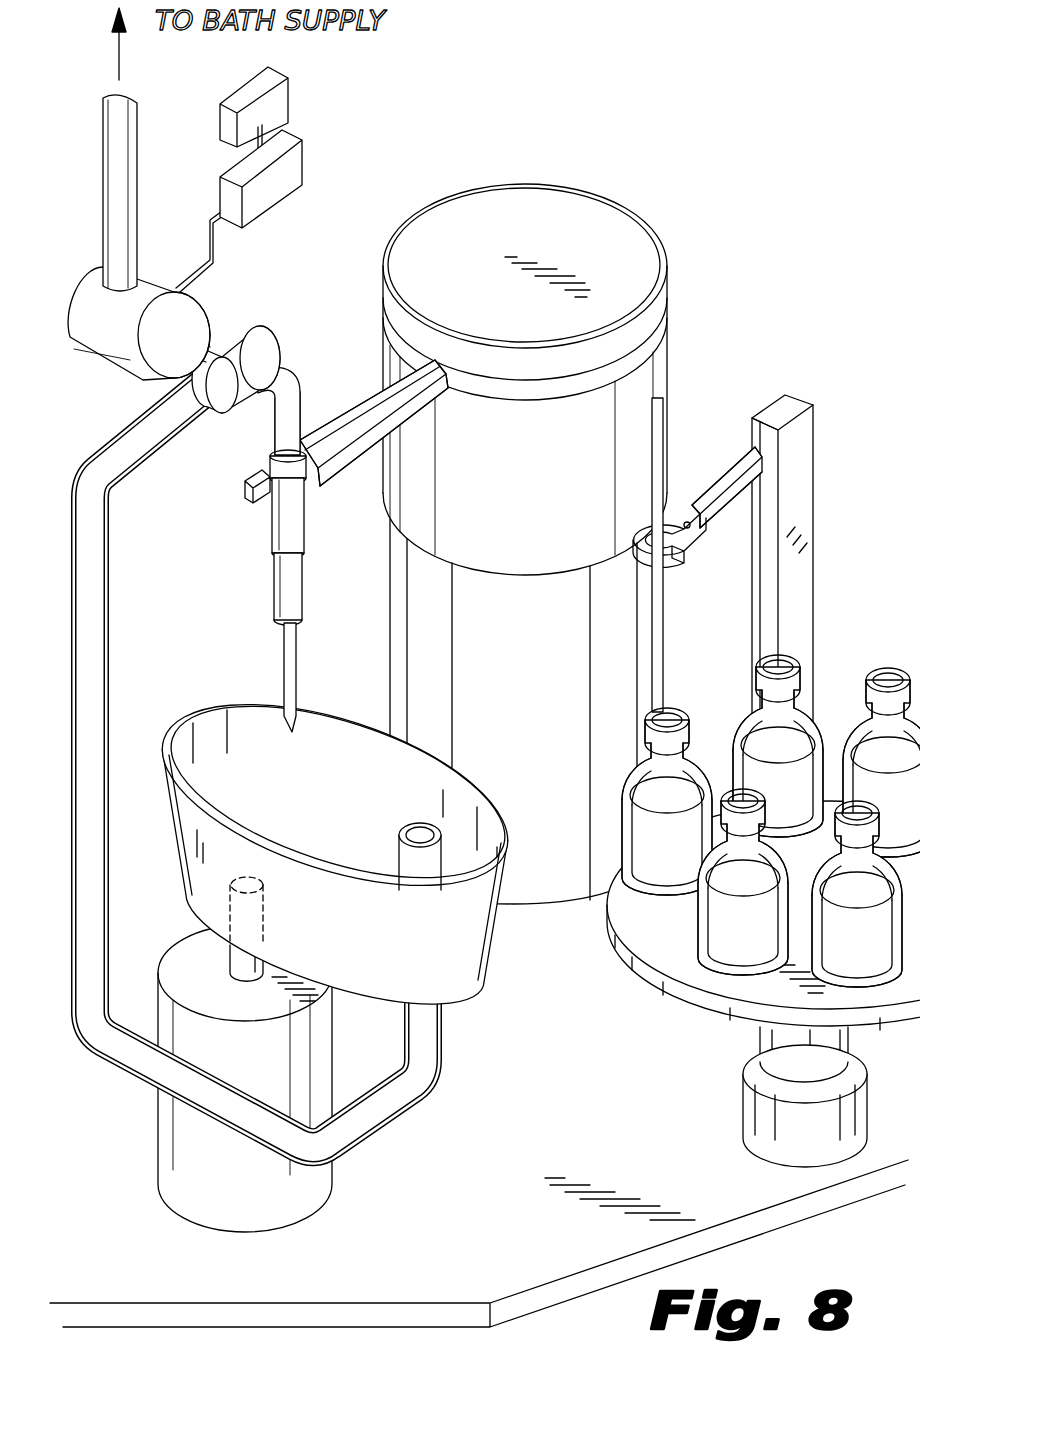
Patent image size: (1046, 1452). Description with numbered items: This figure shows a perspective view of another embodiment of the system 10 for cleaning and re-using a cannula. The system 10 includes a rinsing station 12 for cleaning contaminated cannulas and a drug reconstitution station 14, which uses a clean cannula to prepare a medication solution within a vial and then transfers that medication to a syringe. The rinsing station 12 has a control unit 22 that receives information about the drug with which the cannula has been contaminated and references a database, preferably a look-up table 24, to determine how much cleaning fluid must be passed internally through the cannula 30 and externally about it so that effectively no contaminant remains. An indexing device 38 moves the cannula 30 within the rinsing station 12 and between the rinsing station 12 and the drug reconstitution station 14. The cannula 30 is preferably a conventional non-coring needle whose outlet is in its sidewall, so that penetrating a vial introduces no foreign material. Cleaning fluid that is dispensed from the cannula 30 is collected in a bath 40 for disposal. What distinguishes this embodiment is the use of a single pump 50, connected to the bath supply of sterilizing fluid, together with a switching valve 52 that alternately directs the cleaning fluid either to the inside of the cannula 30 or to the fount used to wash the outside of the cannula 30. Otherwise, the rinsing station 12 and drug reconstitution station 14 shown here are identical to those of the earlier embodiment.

The system for cleaning and re-using a cannula 10 is at (713, 198).
The rinsing station 12 is at (181, 692).
The drug reconstitution station 14 is at (666, 1025).
The control unit 22 is at (300, 165).
The look-up table 24 is at (283, 98).
The cannula 30 is at (287, 672).
The indexing device 38 is at (655, 398).
The bath 40 is at (483, 955).
The pump 50 is at (198, 313).
The switching valve 52 is at (268, 350).